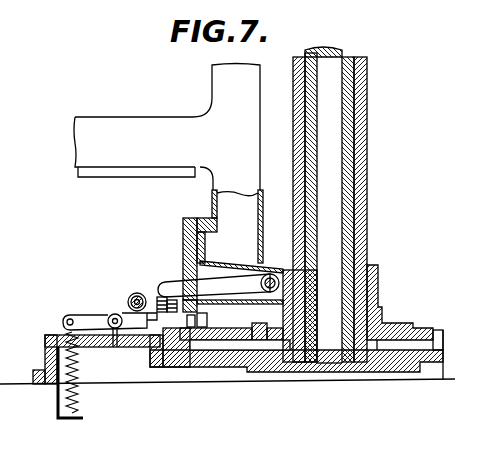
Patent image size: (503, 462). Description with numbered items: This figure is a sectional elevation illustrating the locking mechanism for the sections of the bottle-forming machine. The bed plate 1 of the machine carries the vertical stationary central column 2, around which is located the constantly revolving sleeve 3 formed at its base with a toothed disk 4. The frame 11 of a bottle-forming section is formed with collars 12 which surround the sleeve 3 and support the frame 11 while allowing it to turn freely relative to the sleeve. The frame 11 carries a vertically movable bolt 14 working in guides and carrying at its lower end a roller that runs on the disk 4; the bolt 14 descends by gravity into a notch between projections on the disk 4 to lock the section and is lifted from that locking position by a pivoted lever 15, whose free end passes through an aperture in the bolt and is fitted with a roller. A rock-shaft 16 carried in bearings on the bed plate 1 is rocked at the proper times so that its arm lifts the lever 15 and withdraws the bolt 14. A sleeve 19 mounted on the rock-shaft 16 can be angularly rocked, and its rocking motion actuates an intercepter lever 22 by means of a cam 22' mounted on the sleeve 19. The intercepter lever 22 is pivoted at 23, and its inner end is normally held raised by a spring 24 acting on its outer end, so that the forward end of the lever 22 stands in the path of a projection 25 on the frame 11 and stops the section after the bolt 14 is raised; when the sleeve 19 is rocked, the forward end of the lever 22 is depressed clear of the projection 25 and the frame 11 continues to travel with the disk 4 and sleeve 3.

The bed plate 1 is at (181, 362).
The central column 2 is at (348, 62).
The revolving sleeve 3 is at (368, 202).
The toothed disk 4 is at (213, 333).
The frame 11 is at (178, 184).
The collars 12 is at (378, 277).
The bolt 14 is at (173, 265).
The pivoted lever 15 is at (223, 292).
The rock-shaft 16 is at (129, 296).
The sleeve 19 is at (136, 298).
The intercepter lever 22 is at (85, 312).
The cam 22' is at (103, 307).
The pivot 23 is at (117, 330).
The spring 24 is at (74, 367).
The projection 25 is at (162, 296).